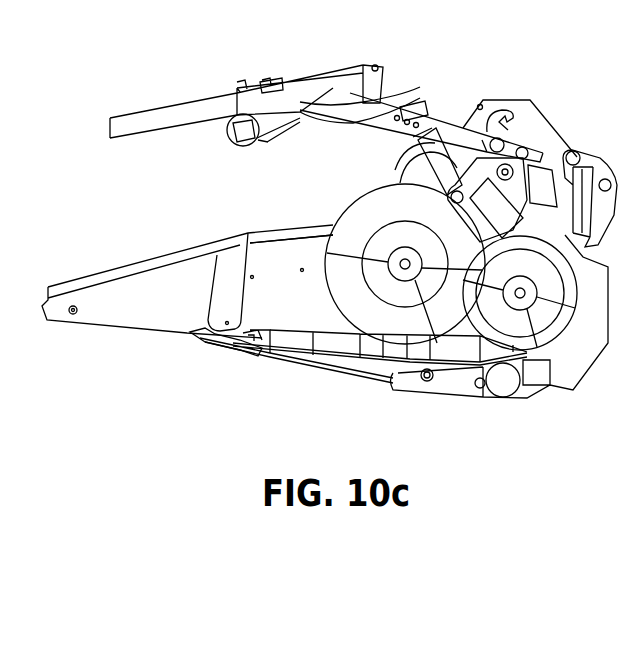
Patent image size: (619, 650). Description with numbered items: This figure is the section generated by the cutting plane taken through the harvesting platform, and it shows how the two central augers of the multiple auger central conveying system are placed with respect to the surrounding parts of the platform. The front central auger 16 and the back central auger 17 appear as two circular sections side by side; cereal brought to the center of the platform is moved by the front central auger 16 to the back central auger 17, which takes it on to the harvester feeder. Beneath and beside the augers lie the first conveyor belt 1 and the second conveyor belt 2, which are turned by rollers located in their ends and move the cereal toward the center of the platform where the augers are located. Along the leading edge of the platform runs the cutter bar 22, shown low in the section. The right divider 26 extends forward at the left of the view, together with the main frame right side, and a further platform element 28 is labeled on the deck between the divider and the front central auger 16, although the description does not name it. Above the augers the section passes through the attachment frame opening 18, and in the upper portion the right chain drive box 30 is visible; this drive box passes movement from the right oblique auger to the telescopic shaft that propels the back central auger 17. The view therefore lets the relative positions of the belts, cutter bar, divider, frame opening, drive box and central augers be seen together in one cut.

The first conveyor belt 1 is at (460, 352).
The second conveyor belt 2 is at (293, 349).
The front central auger 16 is at (391, 307).
The back central auger 17 is at (511, 337).
The attachment frame opening 18 is at (577, 233).
The cutter bar 22 is at (198, 347).
The right divider 26 is at (107, 318).
The deck plate 28 is at (290, 273).
The right chain drive box 30 is at (530, 106).